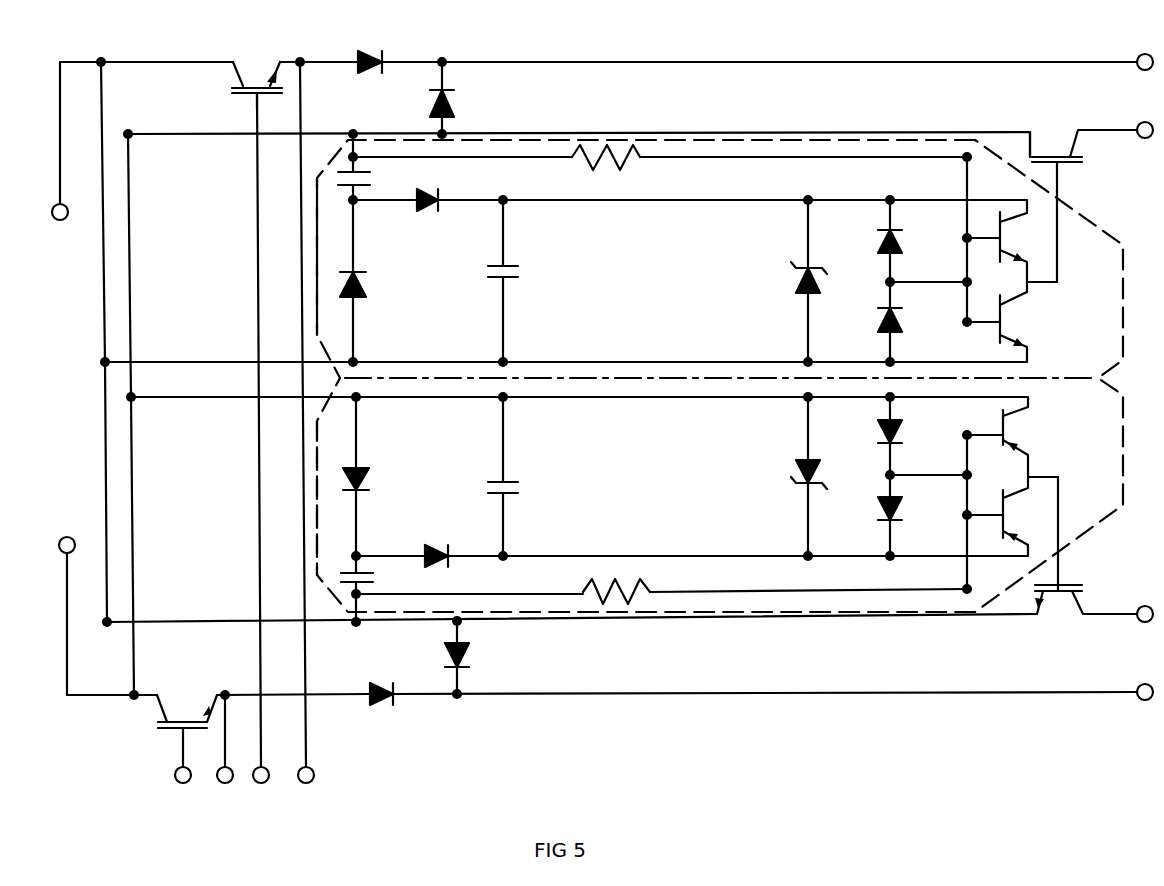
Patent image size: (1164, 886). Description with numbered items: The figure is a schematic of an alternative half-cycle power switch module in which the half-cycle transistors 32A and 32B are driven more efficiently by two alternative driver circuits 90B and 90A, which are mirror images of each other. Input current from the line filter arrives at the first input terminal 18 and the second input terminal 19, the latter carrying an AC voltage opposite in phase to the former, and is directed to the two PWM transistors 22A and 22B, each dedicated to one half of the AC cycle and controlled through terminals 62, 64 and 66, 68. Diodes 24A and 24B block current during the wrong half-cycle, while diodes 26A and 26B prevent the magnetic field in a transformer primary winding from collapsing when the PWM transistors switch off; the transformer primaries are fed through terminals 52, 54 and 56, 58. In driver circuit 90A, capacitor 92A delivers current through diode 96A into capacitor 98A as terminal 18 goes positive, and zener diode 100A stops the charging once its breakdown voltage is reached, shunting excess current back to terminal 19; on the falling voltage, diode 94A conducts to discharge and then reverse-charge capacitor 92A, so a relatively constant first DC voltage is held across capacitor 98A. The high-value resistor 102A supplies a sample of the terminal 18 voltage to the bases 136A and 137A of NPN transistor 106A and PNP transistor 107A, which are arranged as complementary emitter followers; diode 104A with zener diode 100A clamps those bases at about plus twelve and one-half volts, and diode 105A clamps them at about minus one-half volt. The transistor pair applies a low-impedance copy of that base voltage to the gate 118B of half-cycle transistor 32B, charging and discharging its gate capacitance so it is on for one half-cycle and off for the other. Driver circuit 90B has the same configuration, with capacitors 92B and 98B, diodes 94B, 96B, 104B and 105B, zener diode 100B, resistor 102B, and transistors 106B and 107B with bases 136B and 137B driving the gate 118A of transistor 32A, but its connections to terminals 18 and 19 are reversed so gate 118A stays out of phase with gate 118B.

The first input terminal 18 is at (68, 214).
The second input terminal 19 is at (75, 543).
The PWM transistor 22A is at (257, 72).
The PWM transistor 22B is at (183, 705).
The diode 24A is at (357, 53).
The diode 24B is at (380, 707).
The diode 26A is at (453, 104).
The diode 26B is at (470, 653).
The half-cycle transistor 32A is at (1055, 613).
The half-cycle transistor 32B is at (1042, 110).
The terminal 52 is at (1138, 56).
The terminal 54 is at (1138, 124).
The terminal 56 is at (1138, 622).
The terminal 58 is at (1138, 700).
The terminal 62 is at (178, 783).
The terminal 64 is at (219, 783).
The terminal 66 is at (311, 783).
The terminal 68 is at (261, 783).
The driver circuit 90A is at (315, 282).
The driver circuit 90B is at (317, 427).
The capacitor 92A is at (343, 172).
The capacitor 92B is at (340, 592).
The diode 94A is at (367, 290).
The diode 94B is at (370, 470).
The diode 96A is at (425, 210).
The diode 96B is at (430, 545).
The capacitor 98A is at (517, 277).
The capacitor 98B is at (512, 484).
The zener diode 100A is at (800, 287).
The zener diode 100B is at (800, 470).
The resistor 102A is at (614, 160).
The resistor 102B is at (620, 593).
The diode 104A is at (885, 244).
The diode 104B is at (888, 507).
The diode 105A is at (885, 326).
The diode 105B is at (885, 428).
The NPN transistor 106A is at (1033, 237).
The NPN transistor 106B is at (1023, 520).
The PNP transistor 107A is at (1010, 324).
The PNP transistor 107B is at (1012, 432).
The gate 118A is at (1067, 597).
The gate 118B is at (1037, 143).
The base 136A is at (1000, 228).
The base 136B is at (1003, 522).
The base 137A is at (1000, 318).
The base 137B is at (1003, 445).